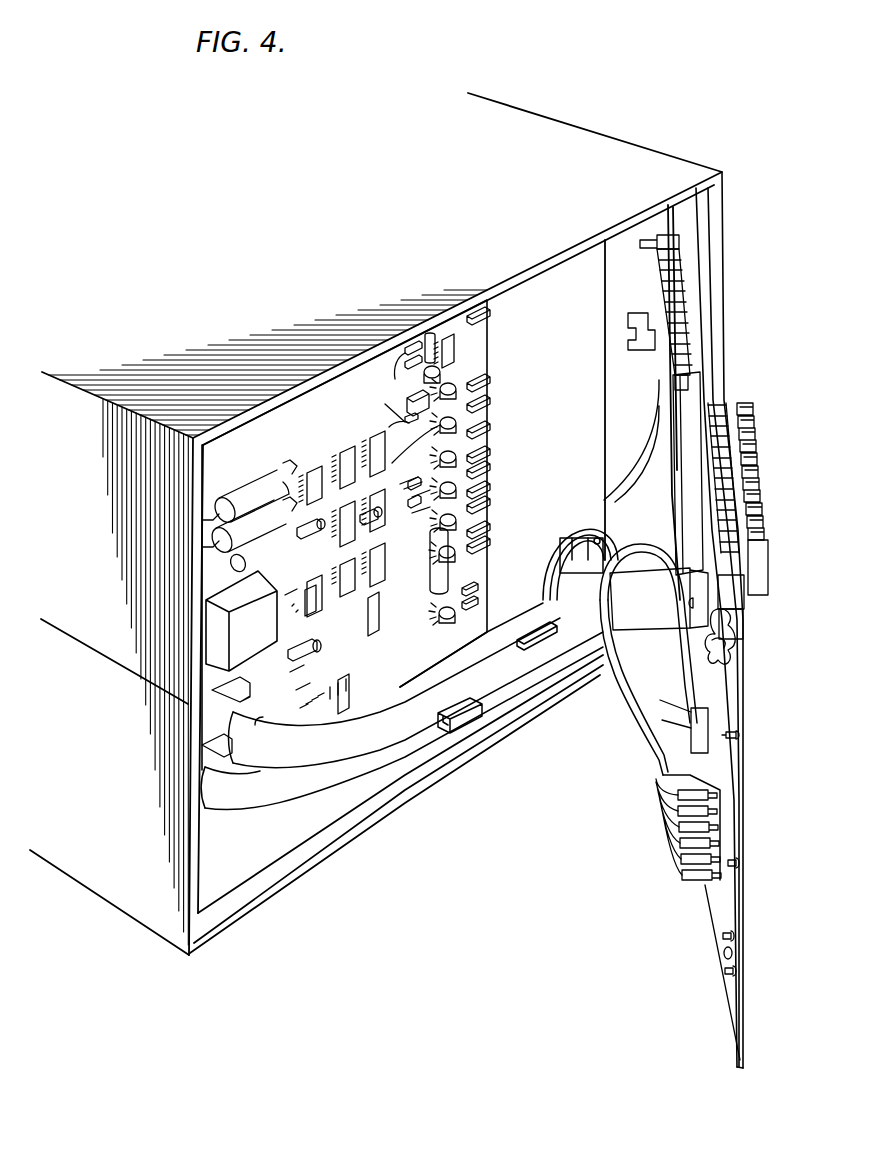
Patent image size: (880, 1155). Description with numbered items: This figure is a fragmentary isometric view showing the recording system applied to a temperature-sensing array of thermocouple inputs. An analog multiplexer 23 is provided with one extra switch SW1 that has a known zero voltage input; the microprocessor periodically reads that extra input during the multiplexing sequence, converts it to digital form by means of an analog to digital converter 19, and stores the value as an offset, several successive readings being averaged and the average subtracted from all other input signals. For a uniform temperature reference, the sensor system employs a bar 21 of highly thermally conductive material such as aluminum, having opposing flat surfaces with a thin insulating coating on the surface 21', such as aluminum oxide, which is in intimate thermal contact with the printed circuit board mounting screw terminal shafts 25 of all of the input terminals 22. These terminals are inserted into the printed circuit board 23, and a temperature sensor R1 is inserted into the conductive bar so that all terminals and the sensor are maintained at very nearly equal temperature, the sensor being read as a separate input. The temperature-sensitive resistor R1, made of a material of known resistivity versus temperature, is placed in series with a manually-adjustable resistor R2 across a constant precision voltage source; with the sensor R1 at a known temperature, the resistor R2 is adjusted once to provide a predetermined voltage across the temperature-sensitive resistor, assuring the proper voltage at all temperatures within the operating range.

The analog to digital converter 19 is at (363, 383).
The extra switch SW1 is at (669, 259).
The analog multiplexer 23 is at (700, 492).
The screw terminal shafts 25 is at (727, 495).
The input terminals 22 is at (762, 500).
The manually-adjustable resistor R2 is at (693, 597).
The insulating coating surface 21' is at (766, 596).
The bar 21 is at (762, 634).
The temperature sensor R1 is at (728, 634).